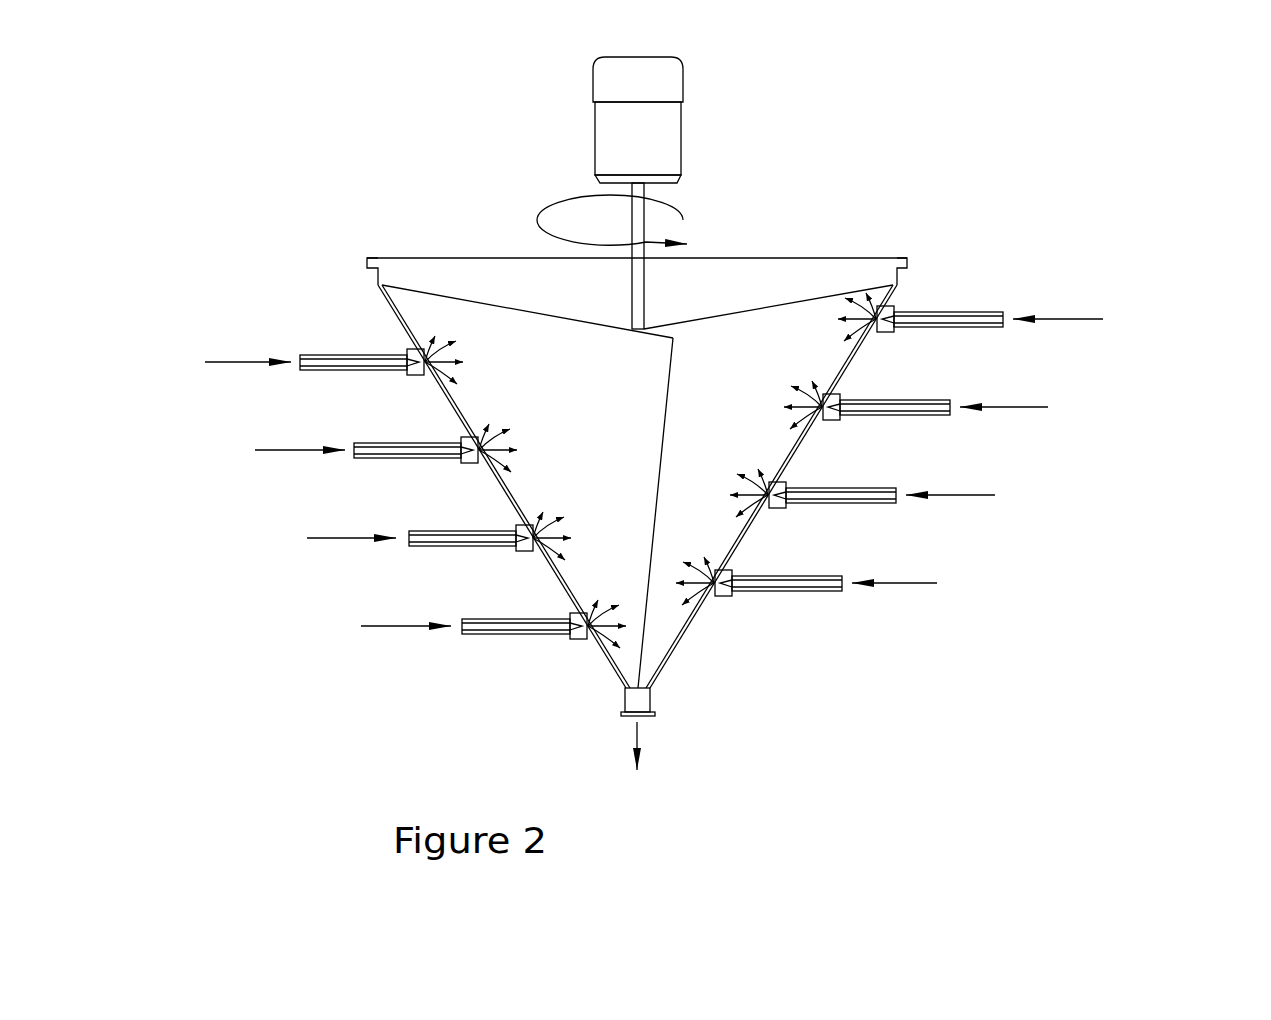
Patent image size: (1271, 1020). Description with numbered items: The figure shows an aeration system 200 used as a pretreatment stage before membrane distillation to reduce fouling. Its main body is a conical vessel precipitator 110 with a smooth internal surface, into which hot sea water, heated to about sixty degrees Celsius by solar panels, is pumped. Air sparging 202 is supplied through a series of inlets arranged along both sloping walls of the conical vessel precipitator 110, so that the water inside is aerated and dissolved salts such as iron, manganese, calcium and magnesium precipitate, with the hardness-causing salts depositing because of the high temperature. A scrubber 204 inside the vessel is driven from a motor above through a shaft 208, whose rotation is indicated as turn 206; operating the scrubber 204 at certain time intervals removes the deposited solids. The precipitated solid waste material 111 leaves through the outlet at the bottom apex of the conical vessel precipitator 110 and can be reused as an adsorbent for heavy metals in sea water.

The aeration system 200 is at (686, 457).
The air sparging 202 is at (947, 310).
The scrubber 204 is at (787, 317).
The turn 206 is at (565, 198).
The shaft 208 is at (644, 213).
The conical vessel precipitator 110 is at (695, 622).
The solid waste material 111 is at (643, 776).